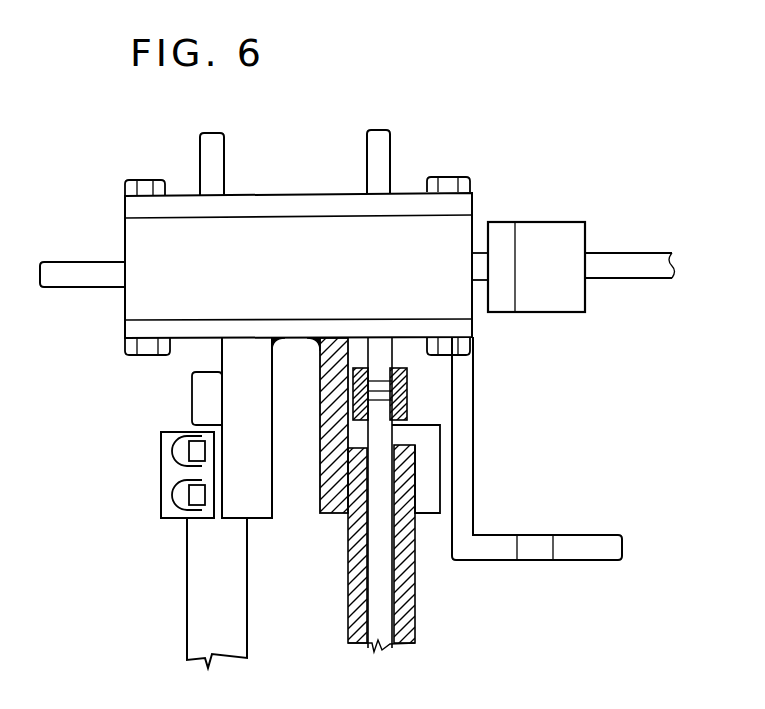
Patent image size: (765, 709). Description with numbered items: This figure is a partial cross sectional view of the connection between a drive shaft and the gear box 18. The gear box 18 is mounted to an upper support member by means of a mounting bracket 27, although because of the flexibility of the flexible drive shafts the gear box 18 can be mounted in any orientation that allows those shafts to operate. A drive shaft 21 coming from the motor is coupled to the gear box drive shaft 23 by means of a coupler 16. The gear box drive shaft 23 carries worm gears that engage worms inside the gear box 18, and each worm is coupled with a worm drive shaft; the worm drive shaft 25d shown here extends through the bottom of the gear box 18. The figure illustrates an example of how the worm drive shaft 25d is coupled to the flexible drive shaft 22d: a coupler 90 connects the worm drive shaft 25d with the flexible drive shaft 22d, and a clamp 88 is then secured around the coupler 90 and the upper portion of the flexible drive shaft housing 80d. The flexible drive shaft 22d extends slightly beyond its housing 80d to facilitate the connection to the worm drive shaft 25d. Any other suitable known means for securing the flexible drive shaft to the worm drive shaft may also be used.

The coupler 16 is at (562, 232).
The gear box 18 is at (142, 235).
The drive shaft 21 is at (647, 258).
The flexible drive shaft 22d is at (380, 483).
The gear box drive shaft 23 is at (57, 290).
The worm drive shaft 25d is at (382, 148).
The mounting bracket 27 is at (465, 425).
The flexible drive shaft housing 80d is at (415, 605).
The clamp 88 is at (165, 500).
The coupler 90 is at (410, 407).